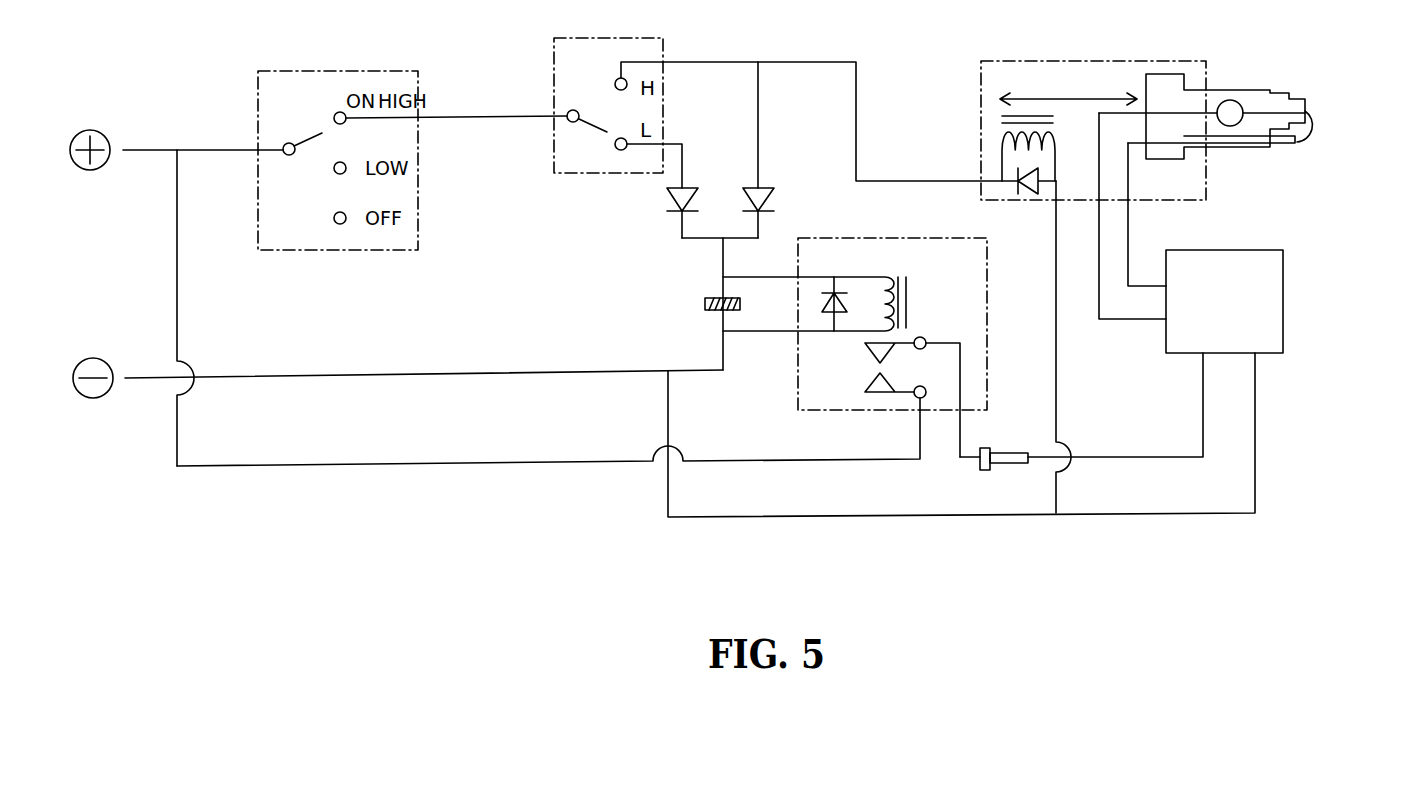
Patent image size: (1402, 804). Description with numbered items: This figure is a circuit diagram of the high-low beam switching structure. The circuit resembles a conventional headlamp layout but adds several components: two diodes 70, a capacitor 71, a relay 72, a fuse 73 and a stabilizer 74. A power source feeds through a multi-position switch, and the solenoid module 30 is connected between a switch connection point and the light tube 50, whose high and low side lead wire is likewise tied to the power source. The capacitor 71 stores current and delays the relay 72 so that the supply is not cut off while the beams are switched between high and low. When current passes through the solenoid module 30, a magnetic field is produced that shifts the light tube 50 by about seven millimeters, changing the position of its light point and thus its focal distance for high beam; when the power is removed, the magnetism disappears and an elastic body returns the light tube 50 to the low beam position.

The solenoid module 30 is at (1080, 60).
The light tube 50 is at (1250, 82).
The diodes 70 is at (667, 202).
The capacitor 71 is at (702, 300).
The relay 72 is at (868, 367).
The fuse 73 is at (1005, 475).
The stabilizer 74 is at (1276, 328).